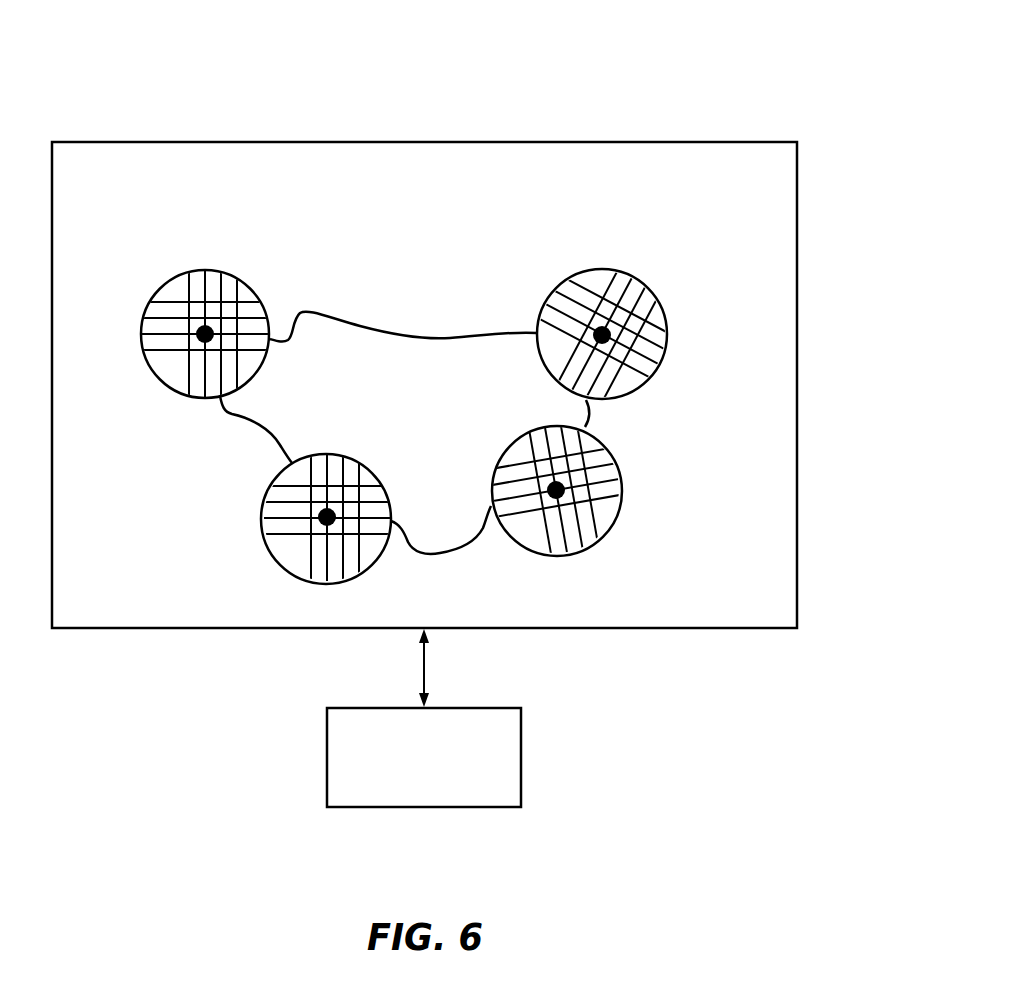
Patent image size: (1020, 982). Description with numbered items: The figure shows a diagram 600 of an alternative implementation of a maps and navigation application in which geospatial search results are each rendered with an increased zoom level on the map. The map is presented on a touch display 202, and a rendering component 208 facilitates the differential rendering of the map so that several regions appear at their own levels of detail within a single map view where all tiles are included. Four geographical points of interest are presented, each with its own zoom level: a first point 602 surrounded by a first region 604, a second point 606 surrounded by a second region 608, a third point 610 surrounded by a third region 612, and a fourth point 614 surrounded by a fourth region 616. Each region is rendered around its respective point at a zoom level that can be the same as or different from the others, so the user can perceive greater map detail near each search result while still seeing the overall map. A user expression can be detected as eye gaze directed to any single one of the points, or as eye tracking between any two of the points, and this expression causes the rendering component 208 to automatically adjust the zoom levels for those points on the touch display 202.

The example maps and navigation interface illustration 600 is at (748, 44).
The touch display 202 is at (423, 141).
The rendering component 208 is at (487, 707).
The first point 602 is at (206, 333).
The first region 604 is at (193, 270).
The second point 606 is at (603, 334).
The second region 608 is at (594, 270).
The third point 610 is at (327, 517).
The third region 612 is at (279, 478).
The fourth point 614 is at (557, 491).
The fourth region 616 is at (549, 427).